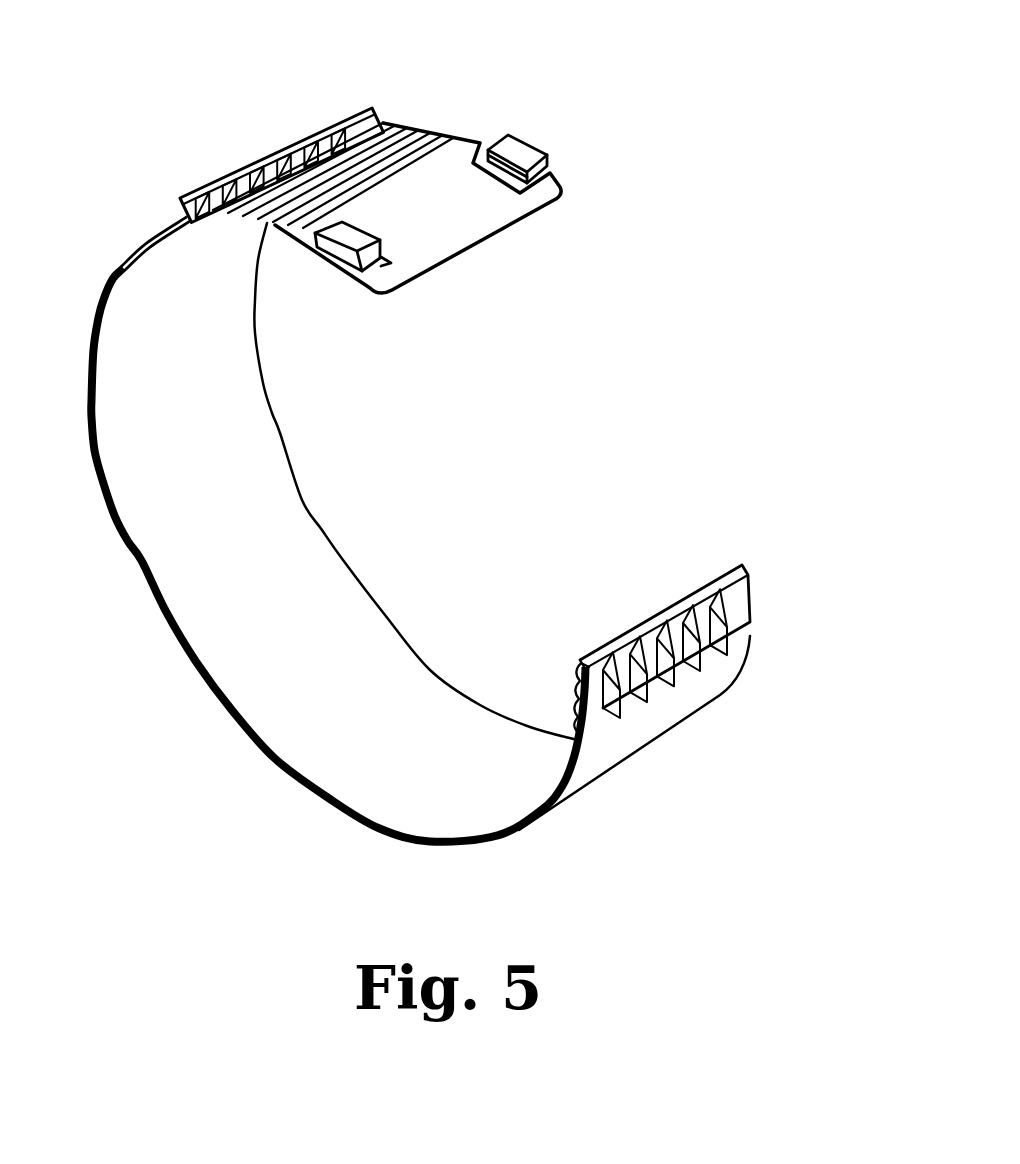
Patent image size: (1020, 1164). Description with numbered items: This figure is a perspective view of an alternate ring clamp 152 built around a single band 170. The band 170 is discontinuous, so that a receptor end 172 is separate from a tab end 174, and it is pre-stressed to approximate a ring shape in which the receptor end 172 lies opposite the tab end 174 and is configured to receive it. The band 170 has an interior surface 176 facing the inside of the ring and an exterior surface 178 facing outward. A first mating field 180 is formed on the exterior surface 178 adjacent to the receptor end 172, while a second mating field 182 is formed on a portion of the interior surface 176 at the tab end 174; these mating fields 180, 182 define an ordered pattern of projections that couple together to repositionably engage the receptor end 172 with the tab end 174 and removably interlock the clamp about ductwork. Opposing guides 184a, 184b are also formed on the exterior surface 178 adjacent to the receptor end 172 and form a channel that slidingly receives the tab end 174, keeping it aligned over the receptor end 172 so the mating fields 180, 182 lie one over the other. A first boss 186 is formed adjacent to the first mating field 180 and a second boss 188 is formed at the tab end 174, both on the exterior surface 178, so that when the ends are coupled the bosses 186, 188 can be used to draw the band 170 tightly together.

The ring clamp 152 is at (620, 840).
The band 170 is at (343, 845).
The receptor end 172 is at (488, 228).
The tab end 174 is at (731, 591).
The interior surface 176 is at (340, 608).
The exterior surface 178 is at (687, 690).
The first mating field 180 is at (410, 122).
The second mating field 182 is at (576, 689).
The opposing guide 184a is at (338, 250).
The opposing guide 184b is at (520, 150).
The first boss 186 is at (203, 190).
The second boss 188 is at (718, 637).